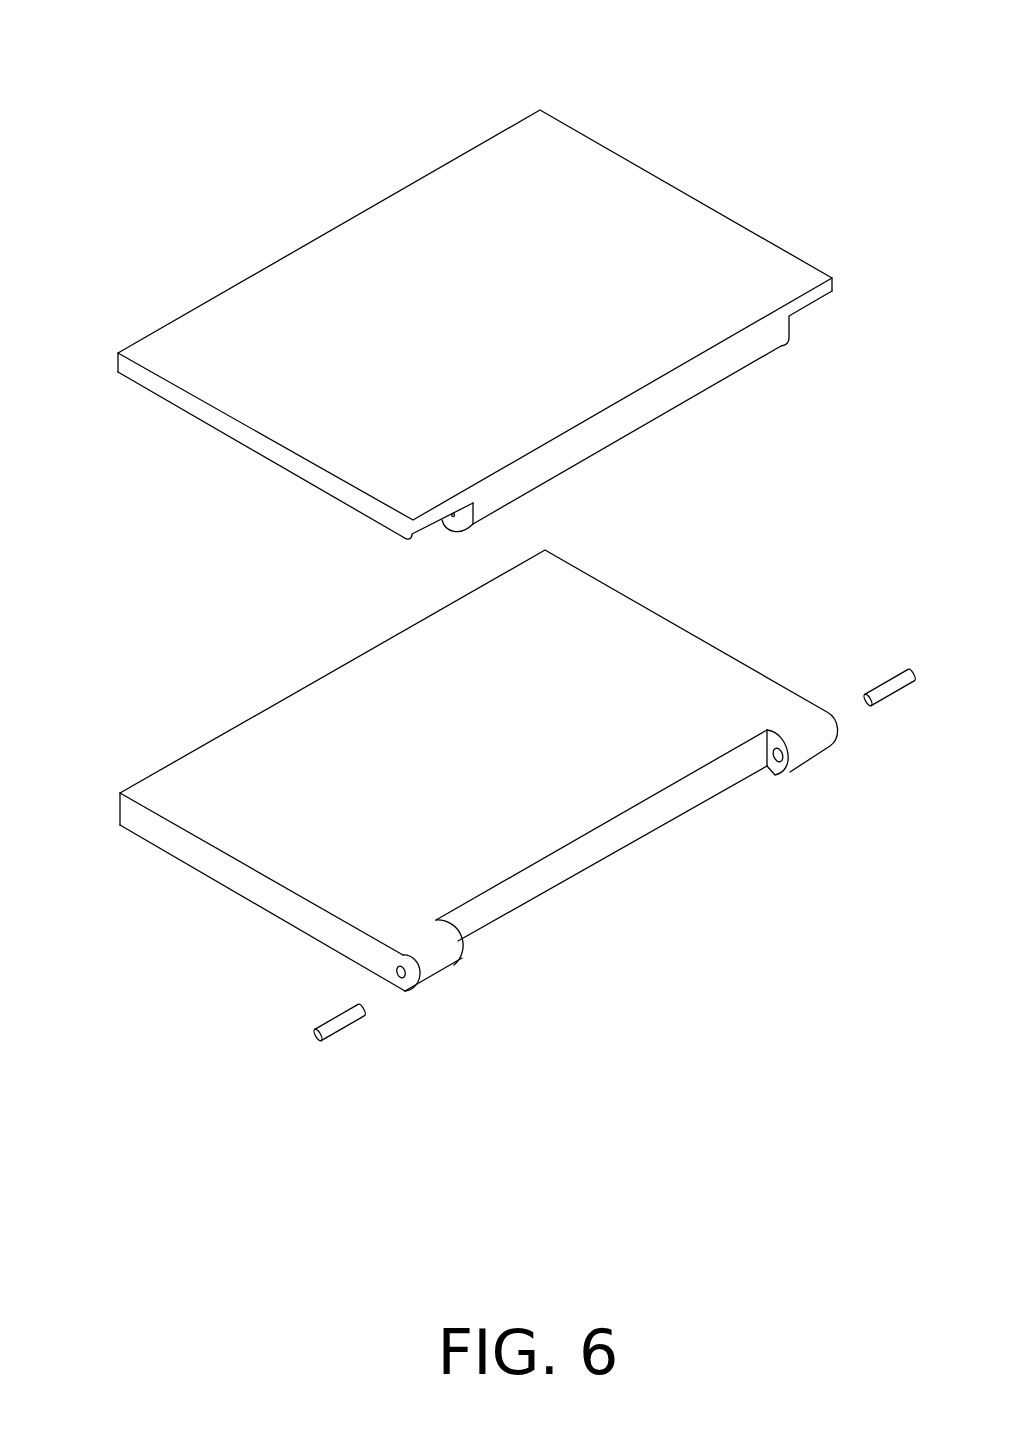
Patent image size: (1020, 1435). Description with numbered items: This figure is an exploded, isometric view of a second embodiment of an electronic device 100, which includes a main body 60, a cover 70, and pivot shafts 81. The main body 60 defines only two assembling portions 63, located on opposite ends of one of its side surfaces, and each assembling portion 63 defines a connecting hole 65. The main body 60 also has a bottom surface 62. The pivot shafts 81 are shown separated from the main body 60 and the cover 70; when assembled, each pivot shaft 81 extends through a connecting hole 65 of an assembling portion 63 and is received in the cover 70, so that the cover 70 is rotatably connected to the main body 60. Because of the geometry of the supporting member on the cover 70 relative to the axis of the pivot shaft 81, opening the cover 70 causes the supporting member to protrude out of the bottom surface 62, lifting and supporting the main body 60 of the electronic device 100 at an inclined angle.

The electronic device 100 is at (546, 33).
The cover 70 is at (660, 217).
The main body 60 is at (441, 820).
The bottom surface 62 is at (153, 849).
The assembling portion 63 is at (450, 957).
The connecting hole 65 is at (398, 976).
The pivot shaft 81 is at (337, 1030).